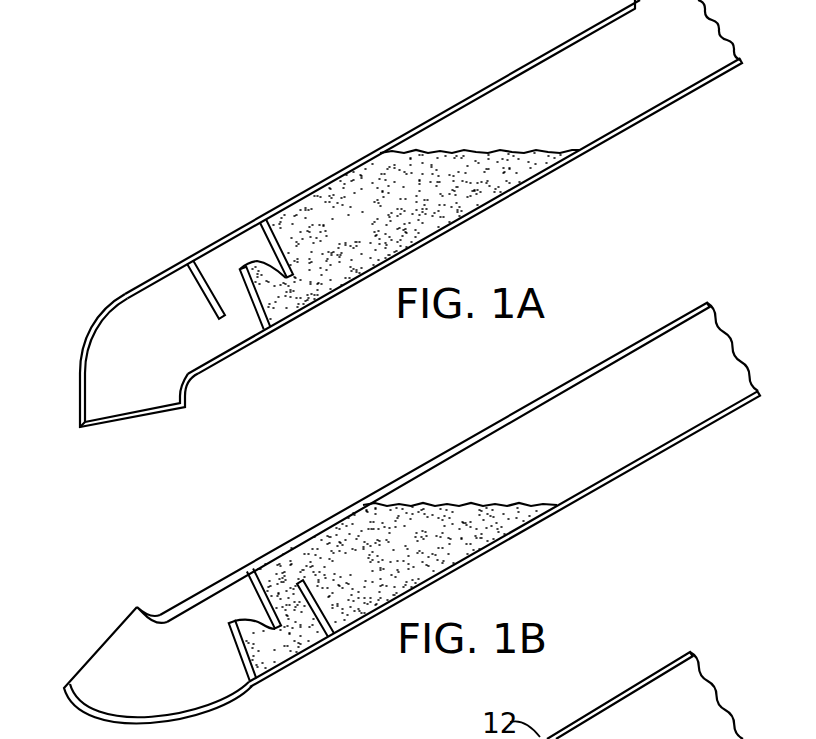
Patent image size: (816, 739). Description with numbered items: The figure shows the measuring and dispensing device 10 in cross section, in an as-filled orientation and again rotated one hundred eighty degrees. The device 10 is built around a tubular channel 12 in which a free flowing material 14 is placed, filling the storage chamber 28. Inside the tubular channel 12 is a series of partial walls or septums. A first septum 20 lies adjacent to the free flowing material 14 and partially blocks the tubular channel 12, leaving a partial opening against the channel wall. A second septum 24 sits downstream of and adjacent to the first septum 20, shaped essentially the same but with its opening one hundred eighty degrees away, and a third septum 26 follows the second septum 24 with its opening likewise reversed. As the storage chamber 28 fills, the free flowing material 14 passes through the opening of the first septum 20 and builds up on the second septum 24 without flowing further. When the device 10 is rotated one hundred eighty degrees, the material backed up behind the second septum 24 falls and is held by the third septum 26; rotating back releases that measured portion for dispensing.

In FIG. 1A, the measuring and dispensing device 10 is at (193, 191).
In FIG. 1B, the measuring and dispensing device 10 is at (183, 594).
In FIG. 1A, the tubular channel 12 is at (433, 187).
In FIG. 1B, the tubular channel 12 is at (460, 495).
In FIG. 1A, the free flowing material 14 is at (488, 190).
In FIG. 1B, the free flowing material 14 is at (474, 550).
In FIG. 1A, the first septum 20 is at (279, 233).
In FIG. 1B, the first septum 20 is at (336, 626).
In FIG. 1A, the second septum 24 is at (262, 318).
In FIG. 1B, the second septum 24 is at (272, 583).
In FIG. 1A, the third septum 26 is at (194, 288).
In FIG. 1B, the third septum 26 is at (246, 672).
In FIG. 1A, the storage chamber 28 is at (637, 100).
In FIG. 1B, the storage chamber 28 is at (645, 438).